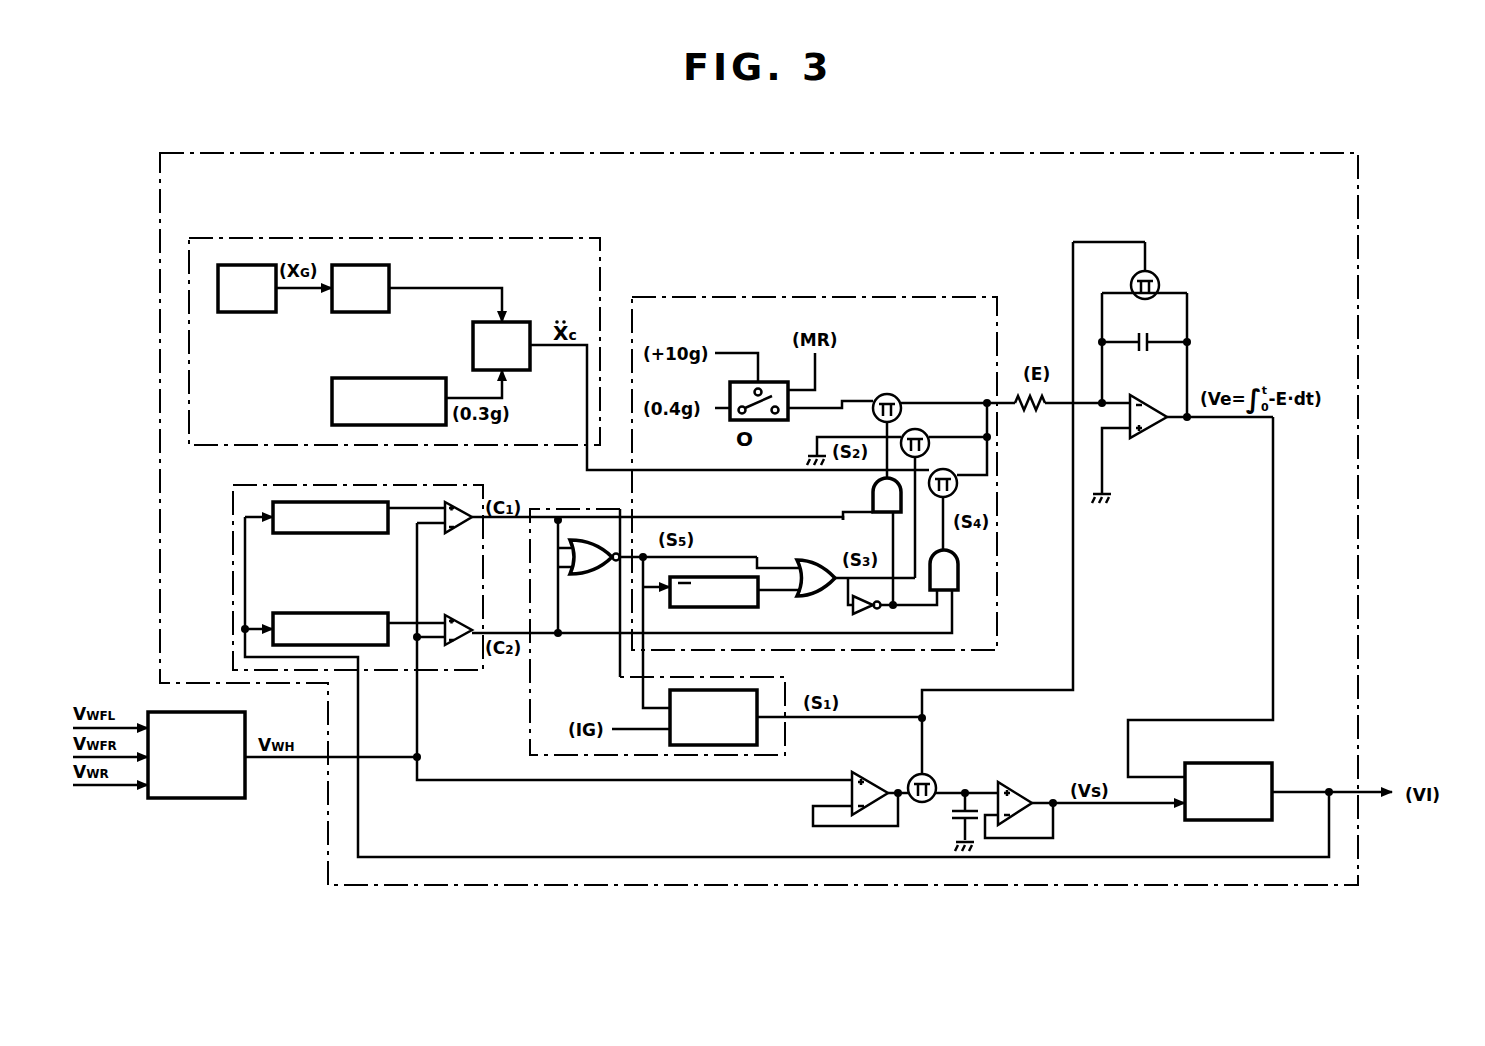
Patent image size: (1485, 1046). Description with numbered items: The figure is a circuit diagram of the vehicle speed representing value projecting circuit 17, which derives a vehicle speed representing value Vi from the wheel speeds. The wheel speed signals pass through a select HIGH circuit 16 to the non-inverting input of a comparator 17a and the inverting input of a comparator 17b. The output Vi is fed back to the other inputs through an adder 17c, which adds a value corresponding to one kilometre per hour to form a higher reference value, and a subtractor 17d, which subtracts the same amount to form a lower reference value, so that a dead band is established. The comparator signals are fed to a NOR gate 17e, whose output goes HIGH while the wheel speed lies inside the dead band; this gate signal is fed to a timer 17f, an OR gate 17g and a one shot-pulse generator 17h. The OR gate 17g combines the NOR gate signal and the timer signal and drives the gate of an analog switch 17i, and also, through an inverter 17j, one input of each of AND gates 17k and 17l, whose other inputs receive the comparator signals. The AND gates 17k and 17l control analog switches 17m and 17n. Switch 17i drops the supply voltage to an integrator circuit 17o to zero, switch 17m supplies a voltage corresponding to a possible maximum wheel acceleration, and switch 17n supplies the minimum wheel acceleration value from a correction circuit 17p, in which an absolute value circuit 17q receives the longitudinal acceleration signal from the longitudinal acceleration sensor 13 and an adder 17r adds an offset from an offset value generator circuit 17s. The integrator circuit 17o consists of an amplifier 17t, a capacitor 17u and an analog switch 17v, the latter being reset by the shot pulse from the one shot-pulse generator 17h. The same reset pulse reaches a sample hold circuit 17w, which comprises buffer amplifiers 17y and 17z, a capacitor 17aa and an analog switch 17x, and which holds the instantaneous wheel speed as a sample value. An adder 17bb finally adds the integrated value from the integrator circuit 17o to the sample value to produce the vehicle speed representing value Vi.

The longitudinal acceleration sensor 13 is at (262, 265).
The select HIGH circuit 16 is at (228, 798).
The vehicle speed representing value projecting circuit 17 is at (1080, 153).
The comparator 17a is at (456, 533).
The comparator 17b is at (468, 615).
The adder 17c is at (340, 533).
The subtractor 17d is at (297, 613).
The NOR gate 17e is at (596, 574).
The timer 17f is at (712, 577).
The OR gate 17g is at (814, 563).
The one shot-pulse generator 17h is at (810, 297).
The analog switch 17i is at (912, 430).
The inverter 17j is at (853, 605).
The AND gate 17k is at (874, 488).
The AND gate 17l is at (958, 578).
The analog switch 17m is at (878, 398).
The analog switch 17n is at (934, 474).
The integrator circuit 17o is at (1200, 264).
The correction circuit 17p is at (522, 238).
The absolute value circuit 17q is at (378, 265).
The adder 17r is at (530, 322).
The offset value generator circuit 17s is at (332, 389).
The amplifier 17t is at (1152, 430).
The capacitor 17u is at (1143, 351).
The analog switch 17v is at (1150, 272).
The sample hold circuit 17w is at (945, 775).
The analog switch 17x is at (918, 775).
The buffer amplifier 17y is at (893, 753).
The buffer amplifier 17z is at (1004, 782).
The capacitor 17aa is at (950, 814).
The adder 17bb is at (1253, 820).